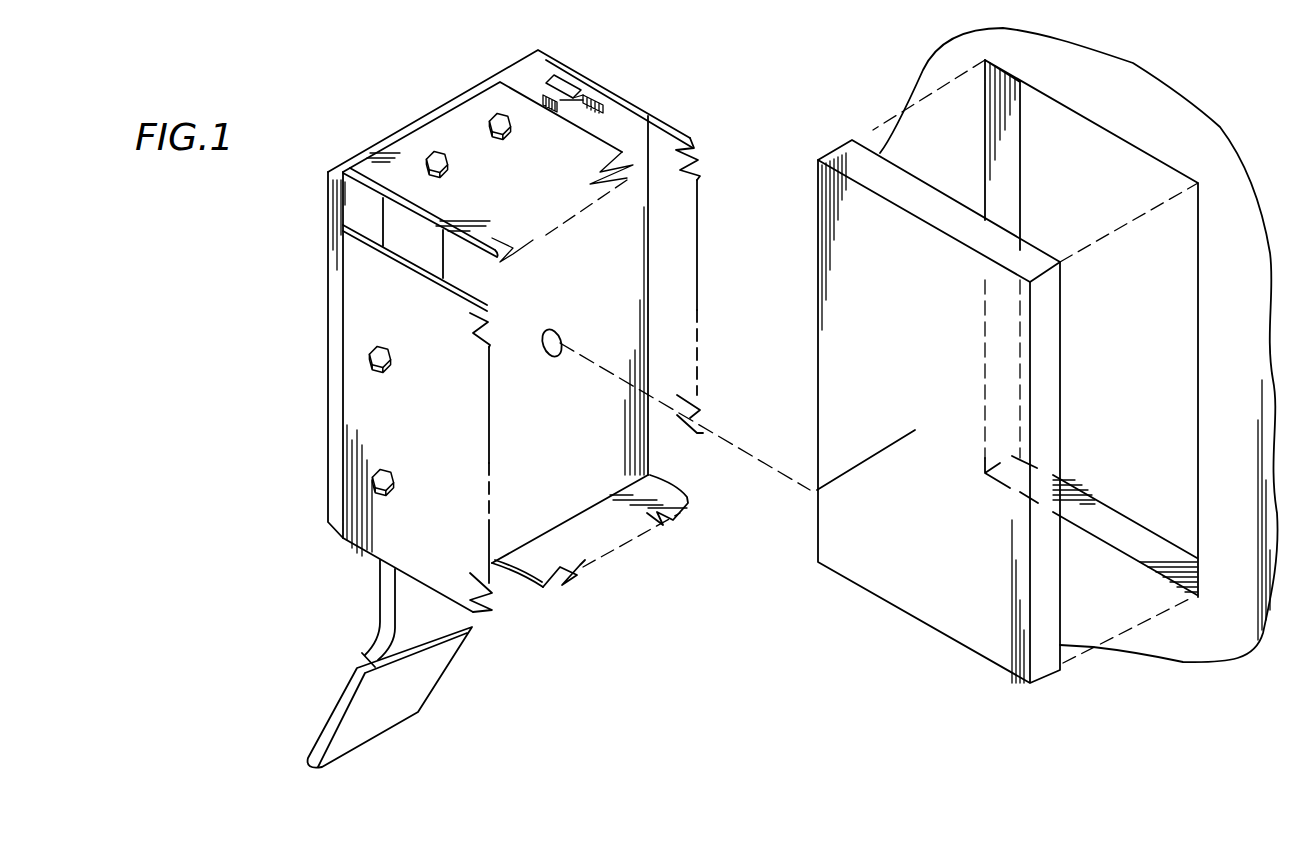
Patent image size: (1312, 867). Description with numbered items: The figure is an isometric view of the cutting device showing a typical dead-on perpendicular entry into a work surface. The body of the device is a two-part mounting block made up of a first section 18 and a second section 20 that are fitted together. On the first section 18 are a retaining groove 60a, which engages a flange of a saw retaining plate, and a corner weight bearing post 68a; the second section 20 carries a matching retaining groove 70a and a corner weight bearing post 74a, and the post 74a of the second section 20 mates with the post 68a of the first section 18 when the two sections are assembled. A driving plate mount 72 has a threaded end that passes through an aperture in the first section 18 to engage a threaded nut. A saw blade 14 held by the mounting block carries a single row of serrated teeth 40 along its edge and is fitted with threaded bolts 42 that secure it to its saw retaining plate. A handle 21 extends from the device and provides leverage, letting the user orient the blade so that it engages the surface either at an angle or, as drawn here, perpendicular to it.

The saw blade 14 is at (388, 308).
The first section 18 is at (338, 205).
The second section 20 is at (448, 258).
The handle 21 is at (330, 713).
The serrated teeth 40 is at (694, 141).
The threaded bolts 42 is at (497, 141).
The retaining groove 60a is at (567, 82).
The corner weight bearing post 68a is at (583, 84).
The retaining groove 70a is at (617, 90).
The driving plate mount 72 is at (552, 352).
The corner weight bearing post 74a is at (596, 88).